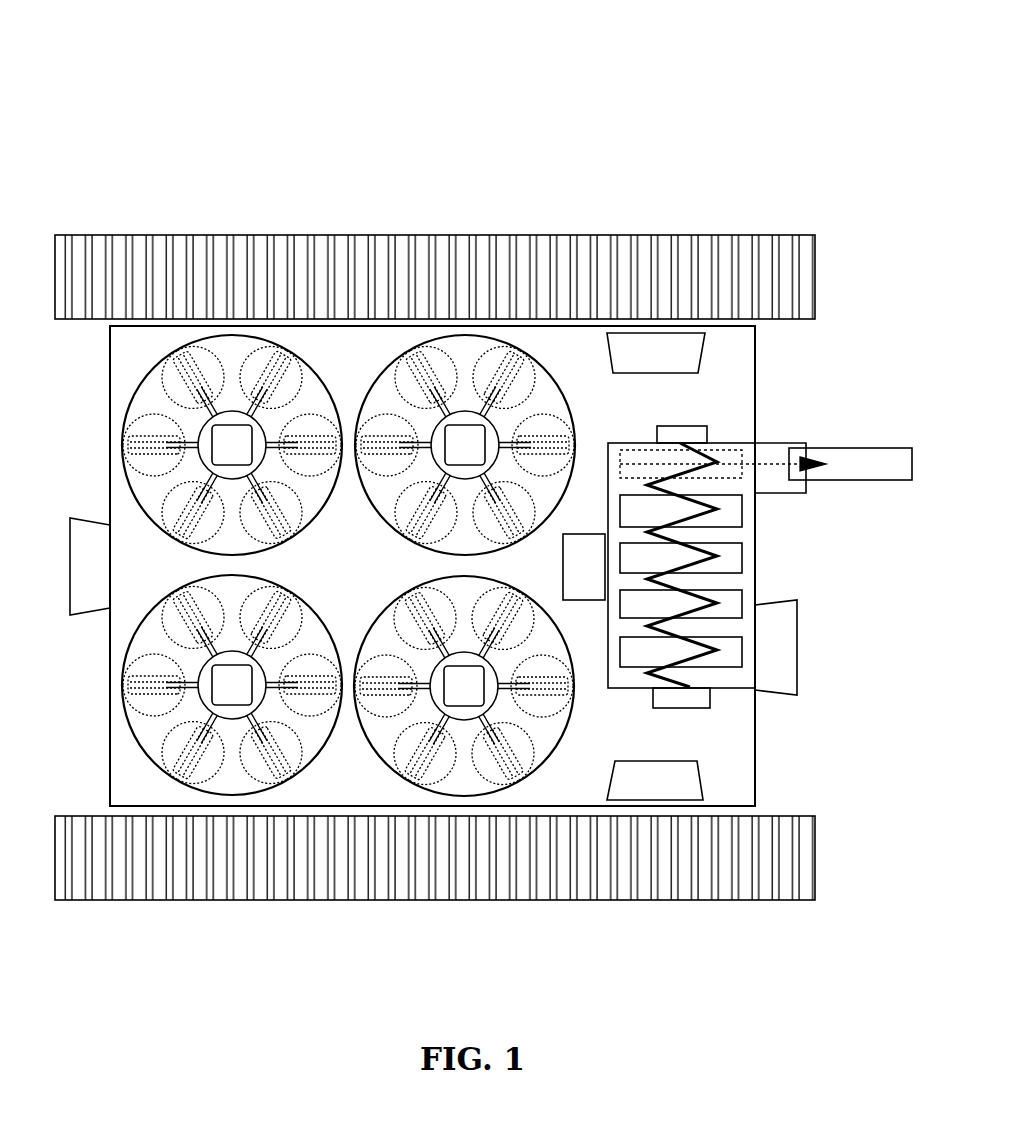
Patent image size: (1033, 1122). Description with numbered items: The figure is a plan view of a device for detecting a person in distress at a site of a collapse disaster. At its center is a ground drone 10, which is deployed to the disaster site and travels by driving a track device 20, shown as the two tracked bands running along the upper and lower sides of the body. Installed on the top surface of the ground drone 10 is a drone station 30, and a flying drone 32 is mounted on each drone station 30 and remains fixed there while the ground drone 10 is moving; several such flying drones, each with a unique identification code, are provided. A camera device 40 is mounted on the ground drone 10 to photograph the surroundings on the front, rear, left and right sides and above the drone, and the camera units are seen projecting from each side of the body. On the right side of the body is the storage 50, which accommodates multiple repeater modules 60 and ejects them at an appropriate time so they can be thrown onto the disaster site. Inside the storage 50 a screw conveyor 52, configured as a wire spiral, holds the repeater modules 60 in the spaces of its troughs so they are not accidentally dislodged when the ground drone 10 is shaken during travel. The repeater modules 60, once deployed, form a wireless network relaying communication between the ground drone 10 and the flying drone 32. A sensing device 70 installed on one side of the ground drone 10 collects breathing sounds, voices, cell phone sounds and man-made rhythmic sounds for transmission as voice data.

The ground drone 10 is at (316, 173).
The track device 20 is at (247, 888).
The drone station 30 is at (130, 490).
The flying drone 32 is at (200, 425).
The camera device 40 is at (70, 568).
The storage 50 is at (715, 680).
The screw conveyor 52 is at (732, 565).
The repeater module 60 is at (866, 448).
The sensing device 70 is at (578, 572).